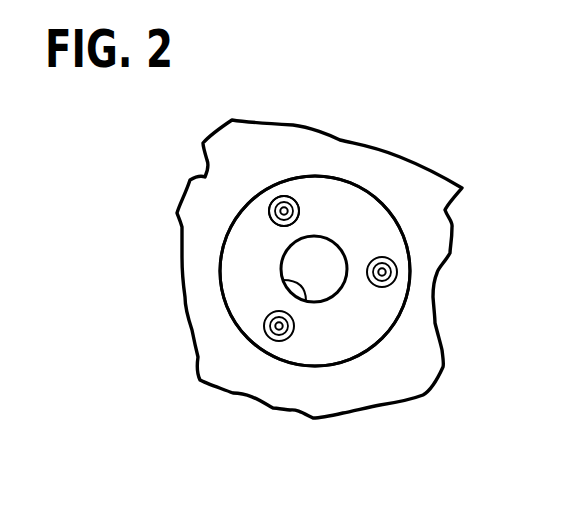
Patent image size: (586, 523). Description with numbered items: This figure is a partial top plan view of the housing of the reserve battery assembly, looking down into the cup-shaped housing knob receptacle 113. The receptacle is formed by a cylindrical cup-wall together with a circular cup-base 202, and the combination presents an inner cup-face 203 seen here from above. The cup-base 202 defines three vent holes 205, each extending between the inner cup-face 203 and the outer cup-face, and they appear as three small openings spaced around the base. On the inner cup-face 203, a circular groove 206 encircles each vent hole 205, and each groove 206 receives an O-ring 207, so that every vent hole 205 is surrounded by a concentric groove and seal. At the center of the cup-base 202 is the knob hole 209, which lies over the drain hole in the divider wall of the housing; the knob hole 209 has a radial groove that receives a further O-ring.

The knob receptacle 113 is at (368, 206).
The cup-base 202 is at (382, 317).
The inner cup-face 203 is at (362, 235).
The vent hole 205 is at (289, 201).
The circular groove 206 is at (274, 191).
The O-ring 207 is at (270, 217).
The knob hole 209 is at (283, 280).